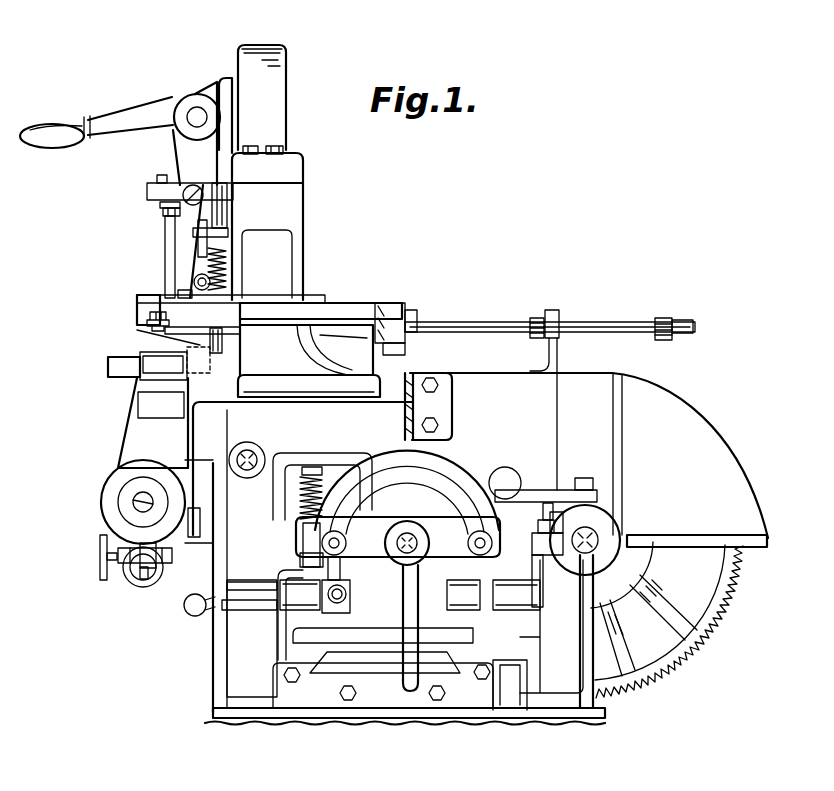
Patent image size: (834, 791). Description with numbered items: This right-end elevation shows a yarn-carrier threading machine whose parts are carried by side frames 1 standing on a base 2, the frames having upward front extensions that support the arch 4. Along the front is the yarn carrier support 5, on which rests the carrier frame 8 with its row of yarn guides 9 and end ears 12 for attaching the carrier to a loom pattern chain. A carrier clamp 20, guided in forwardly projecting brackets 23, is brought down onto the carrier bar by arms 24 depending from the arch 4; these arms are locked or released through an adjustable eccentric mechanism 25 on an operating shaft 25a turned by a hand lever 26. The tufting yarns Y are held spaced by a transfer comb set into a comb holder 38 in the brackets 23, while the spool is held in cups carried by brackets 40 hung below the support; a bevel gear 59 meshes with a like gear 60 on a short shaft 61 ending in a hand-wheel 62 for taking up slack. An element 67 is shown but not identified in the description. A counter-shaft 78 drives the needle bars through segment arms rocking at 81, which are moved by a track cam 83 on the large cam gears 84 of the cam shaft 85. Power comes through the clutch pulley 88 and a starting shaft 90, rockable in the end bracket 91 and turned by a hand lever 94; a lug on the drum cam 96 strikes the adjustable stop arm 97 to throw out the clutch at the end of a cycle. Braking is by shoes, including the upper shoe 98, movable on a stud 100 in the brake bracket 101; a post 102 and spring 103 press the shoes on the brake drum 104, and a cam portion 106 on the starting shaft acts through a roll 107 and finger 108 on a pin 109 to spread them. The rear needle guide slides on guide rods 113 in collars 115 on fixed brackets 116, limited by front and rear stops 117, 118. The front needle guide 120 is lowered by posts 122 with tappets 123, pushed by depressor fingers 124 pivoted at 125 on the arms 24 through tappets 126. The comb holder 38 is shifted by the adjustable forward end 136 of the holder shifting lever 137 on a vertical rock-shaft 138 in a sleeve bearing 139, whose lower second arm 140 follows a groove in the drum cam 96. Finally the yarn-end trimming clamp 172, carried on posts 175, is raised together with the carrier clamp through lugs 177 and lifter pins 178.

The side frames 1 is at (230, 660).
The base 2 is at (603, 715).
The arch 4 is at (255, 58).
The yarn carrier support 5 is at (205, 385).
The carrier frame 8 is at (207, 363).
The yarn guides 9 is at (215, 343).
The ears 12 is at (110, 363).
The carrier clamp 20 is at (195, 333).
The forwardly projecting brackets 23 is at (142, 303).
The arms 24 is at (190, 152).
The adjustable eccentric mechanism 25 is at (182, 120).
The operating shaft 25a is at (197, 108).
The hand lever 26 is at (45, 128).
The comb holder 38 is at (148, 318).
The spool brackets 40 is at (118, 480).
The bevel gear 59 is at (147, 577).
The bevel gear 60 is at (157, 560).
The short shaft 61 is at (130, 570).
The hand-wheel 62 is at (100, 546).
The bracket 67 is at (168, 403).
The counter-shaft 78 is at (250, 450).
The segment arm pivot 81 is at (493, 470).
The track cam 83 is at (643, 553).
The cam gears 84 is at (737, 588).
The cam shaft 85 is at (590, 532).
The clutch pulley 88 is at (362, 472).
The starting shaft 90 is at (487, 607).
The end bracket 91 is at (277, 688).
The hand lever 94 is at (190, 617).
The drum cam 96 is at (613, 532).
The adjustable stop arm 97 is at (540, 568).
The upper brake shoe 98 is at (432, 490).
The stud 100 is at (478, 544).
The brake bracket 101 is at (397, 663).
The post 102 is at (303, 542).
The spring 103 is at (298, 495).
The brake drum 104 is at (377, 508).
The cam portion 106 is at (383, 662).
The roll 107 is at (346, 592).
The finger 108 is at (340, 568).
The pin 109 is at (338, 540).
The guide rods 113 is at (460, 323).
The collars 115 is at (552, 310).
The fixed brackets 116 is at (560, 350).
The front stop 117 is at (533, 312).
The rear stop 118 is at (662, 315).
The front needle guide 120 is at (182, 300).
The upright posts 122 is at (166, 262).
The adjustable tappets 123 is at (165, 212).
The depressor fingers 124 is at (150, 190).
The pivot 125 is at (195, 186).
The adjustable tappets 126 is at (160, 205).
The adjustable forward end 136 is at (232, 304).
The holder shifting lever 137 is at (342, 306).
The vertical rock-shaft 138 is at (390, 350).
The sleeve bearing 139 is at (392, 415).
The second arm 140 is at (525, 490).
The yarn-end trimming clamp 172 is at (241, 297).
The posts 175 is at (227, 205).
The lugs 177 is at (220, 232).
The lifter pins 178 is at (200, 242).
The tufting yarns Y is at (127, 422).